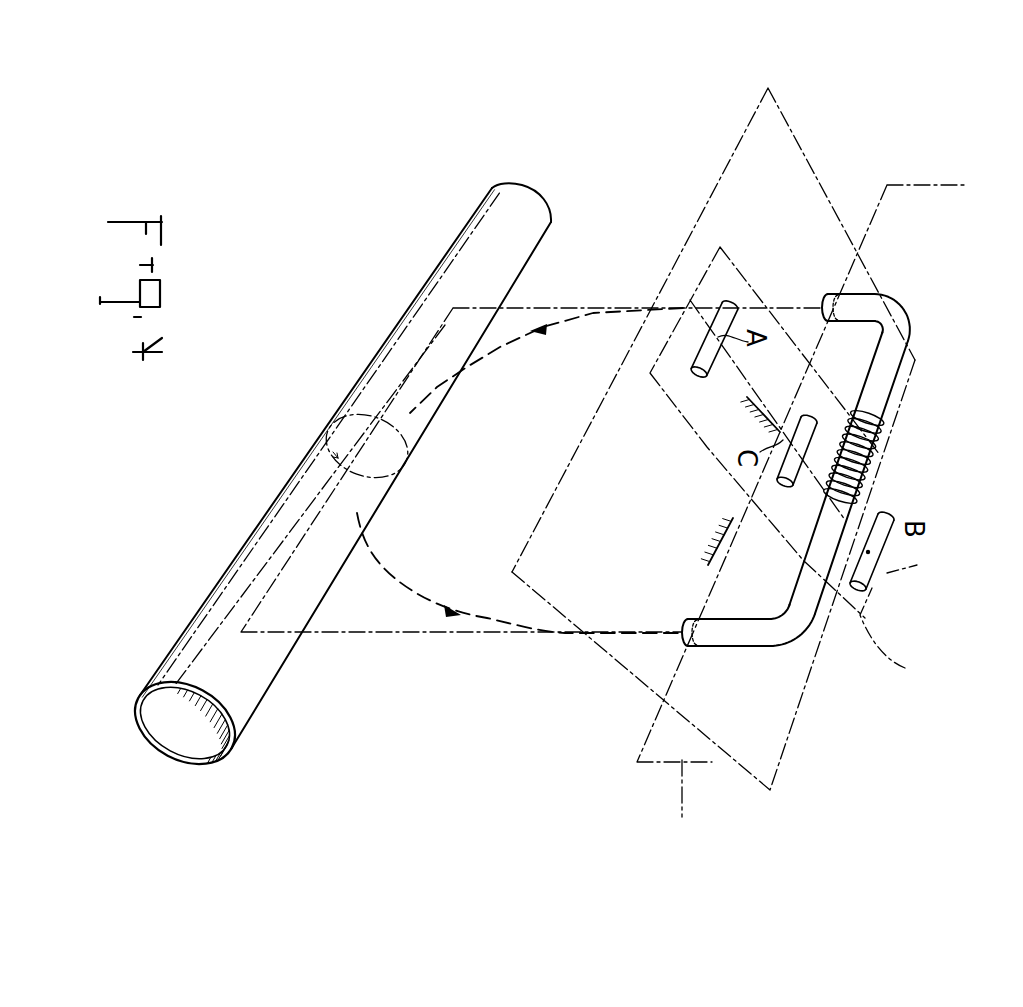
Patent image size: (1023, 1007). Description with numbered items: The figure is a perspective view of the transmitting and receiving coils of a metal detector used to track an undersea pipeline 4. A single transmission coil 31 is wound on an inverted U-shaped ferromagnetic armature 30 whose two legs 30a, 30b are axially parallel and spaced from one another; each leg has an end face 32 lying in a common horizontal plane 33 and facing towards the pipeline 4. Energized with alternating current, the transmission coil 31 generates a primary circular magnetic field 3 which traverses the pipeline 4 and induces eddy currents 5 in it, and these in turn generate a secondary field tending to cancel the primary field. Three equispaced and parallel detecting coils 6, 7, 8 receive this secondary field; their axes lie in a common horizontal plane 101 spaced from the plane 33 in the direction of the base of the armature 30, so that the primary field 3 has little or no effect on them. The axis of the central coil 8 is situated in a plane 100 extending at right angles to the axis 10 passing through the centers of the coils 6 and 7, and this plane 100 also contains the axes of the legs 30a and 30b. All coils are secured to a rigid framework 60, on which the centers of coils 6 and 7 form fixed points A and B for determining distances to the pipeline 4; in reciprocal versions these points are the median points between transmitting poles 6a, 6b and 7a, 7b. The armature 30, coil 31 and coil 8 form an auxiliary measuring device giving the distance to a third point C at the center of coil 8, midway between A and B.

The primary circular magnetic field 3 is at (613, 630).
The buried undersea pipeline 4 is at (265, 667).
The eddy currents 5 is at (357, 413).
The detecting coil 6 is at (700, 334).
The transmitting pole 6a is at (692, 378).
The transmitting pole 6b is at (735, 299).
The detecting coil 7 is at (863, 607).
The transmitting pole 7a is at (823, 590).
The transmitting pole 7b is at (893, 513).
The central detecting coil 8 is at (790, 478).
The horizontal axis 10 is at (912, 564).
The inverted U-shaped ferromagnetic armature 30 is at (803, 472).
The leg of the armature 30a is at (863, 305).
The leg of the armature 30b is at (735, 646).
The transmission coil 31 is at (885, 452).
The end face 32 is at (826, 300).
The horizontal plane 33 is at (807, 160).
The rigid framework 60 is at (727, 522).
The vertical plane 100 is at (686, 816).
The horizontal plane 101 is at (895, 634).